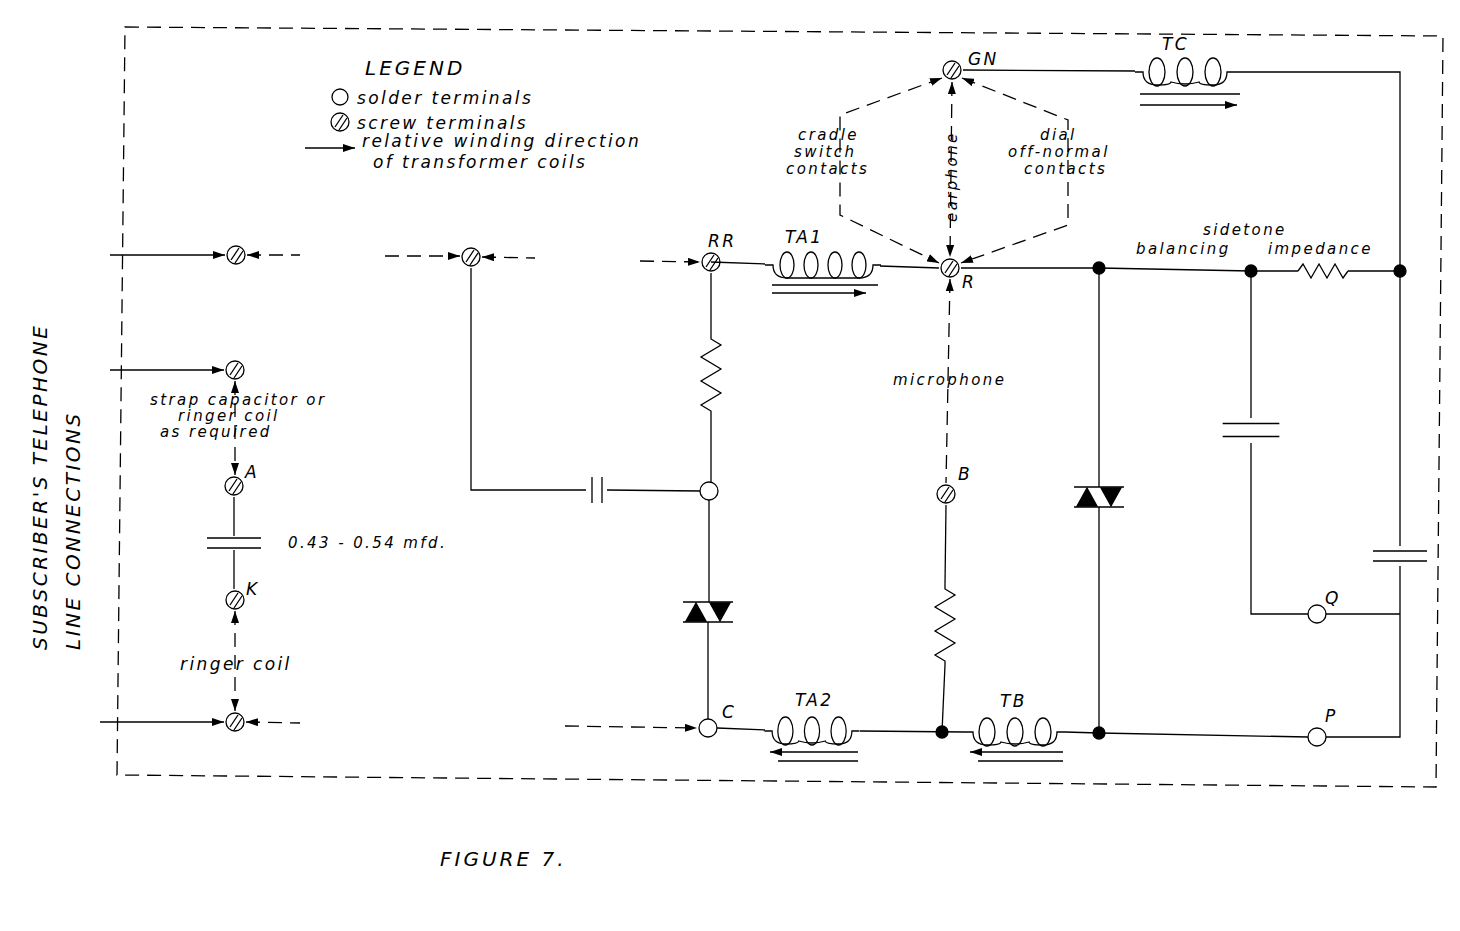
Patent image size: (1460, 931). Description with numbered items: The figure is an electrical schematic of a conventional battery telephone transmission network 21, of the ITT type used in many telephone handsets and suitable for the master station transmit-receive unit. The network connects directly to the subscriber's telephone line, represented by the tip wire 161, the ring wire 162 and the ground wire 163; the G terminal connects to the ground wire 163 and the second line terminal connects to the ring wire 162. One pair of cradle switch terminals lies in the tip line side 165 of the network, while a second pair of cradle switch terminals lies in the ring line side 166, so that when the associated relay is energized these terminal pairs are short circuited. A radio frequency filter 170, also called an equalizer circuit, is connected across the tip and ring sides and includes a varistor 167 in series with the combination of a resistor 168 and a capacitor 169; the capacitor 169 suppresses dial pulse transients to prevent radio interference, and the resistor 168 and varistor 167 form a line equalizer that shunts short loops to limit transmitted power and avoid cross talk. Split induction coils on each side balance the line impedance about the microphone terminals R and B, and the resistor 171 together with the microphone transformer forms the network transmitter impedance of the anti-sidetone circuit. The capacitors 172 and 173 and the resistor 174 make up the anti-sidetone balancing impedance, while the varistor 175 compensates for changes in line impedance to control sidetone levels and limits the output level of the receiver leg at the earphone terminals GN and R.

The transmission network 21 is at (1100, 35).
The tip wire 161 is at (160, 253).
The ring wire 162 is at (135, 722).
The ground wire 163 is at (165, 370).
The tip line side 165 is at (650, 235).
The ring line side 166 is at (650, 738).
The varistor 167 is at (765, 583).
The resistor 168 is at (720, 388).
The capacitor 169 is at (608, 493).
The radio frequency filter 170 is at (589, 443).
The resistor 171 is at (950, 588).
The capacitor 172 is at (1240, 422).
The capacitor 173 is at (1398, 546).
The resistor 174 is at (1290, 272).
The varistor 175 is at (1104, 510).